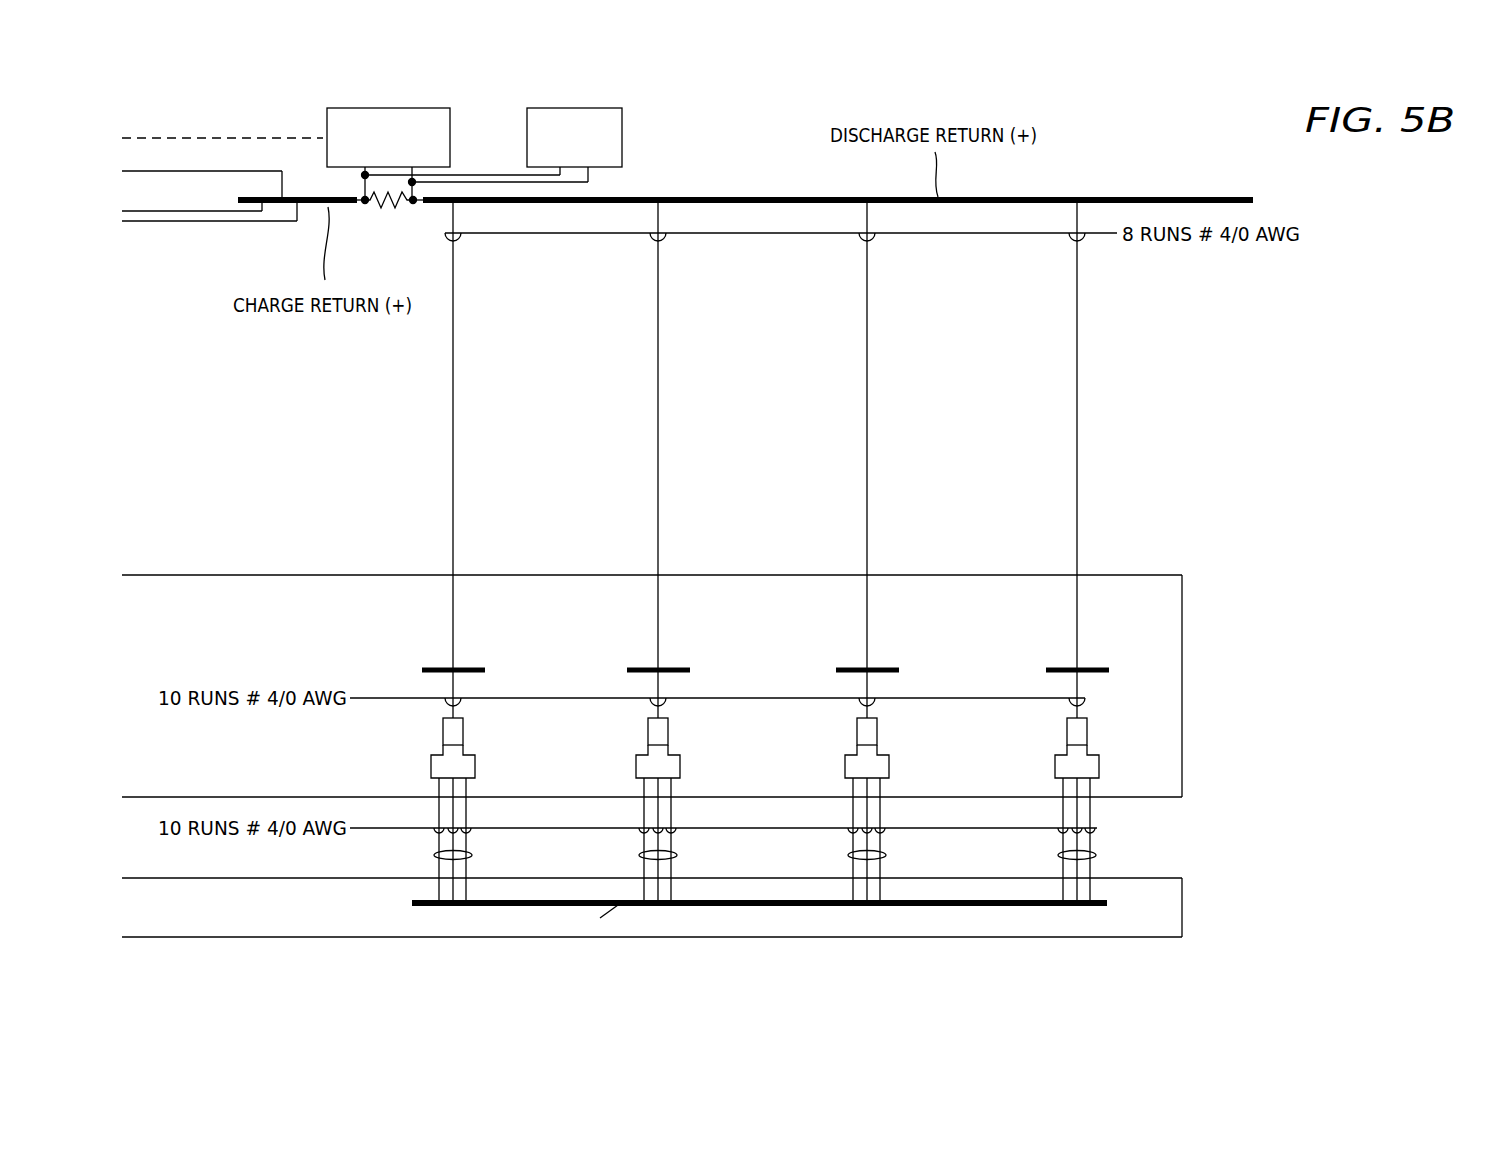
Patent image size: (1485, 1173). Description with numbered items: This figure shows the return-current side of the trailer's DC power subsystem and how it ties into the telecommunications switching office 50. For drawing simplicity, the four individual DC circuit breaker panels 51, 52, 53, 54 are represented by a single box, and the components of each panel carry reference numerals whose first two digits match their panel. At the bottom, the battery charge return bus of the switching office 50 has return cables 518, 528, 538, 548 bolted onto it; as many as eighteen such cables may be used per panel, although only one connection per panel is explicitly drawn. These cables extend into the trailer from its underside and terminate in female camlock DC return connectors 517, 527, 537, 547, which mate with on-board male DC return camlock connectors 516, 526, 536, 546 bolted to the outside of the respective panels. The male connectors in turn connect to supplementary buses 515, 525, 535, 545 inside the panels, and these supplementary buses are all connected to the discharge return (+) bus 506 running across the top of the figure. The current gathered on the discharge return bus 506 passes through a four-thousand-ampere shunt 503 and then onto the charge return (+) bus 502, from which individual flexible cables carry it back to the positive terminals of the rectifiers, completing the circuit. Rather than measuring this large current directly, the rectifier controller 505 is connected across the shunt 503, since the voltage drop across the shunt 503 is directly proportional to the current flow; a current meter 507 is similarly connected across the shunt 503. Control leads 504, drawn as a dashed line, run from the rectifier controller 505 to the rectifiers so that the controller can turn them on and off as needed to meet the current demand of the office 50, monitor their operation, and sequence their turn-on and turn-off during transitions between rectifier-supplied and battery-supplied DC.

The switching office 50 is at (1184, 913).
The DC circuit breaker panel 51 is at (342, 575).
The DC circuit breaker panel 52 is at (483, 460).
The DC circuit breaker panel 53 is at (605, 460).
The DC circuit breaker panel 54 is at (729, 460).
The charge return (+) bus 502 is at (313, 194).
The shunt 503 is at (388, 209).
The control leads 504 is at (207, 139).
The rectifier controller 505 is at (450, 140).
The discharge return (+) bus 506 is at (1243, 198).
The current meter 507 is at (622, 140).
The supplementary bus 515 is at (430, 667).
The male DC return camlock connectors 516 is at (381, 731).
The female 3-FER camlock DC return connectors 517 is at (382, 761).
The return cables 518 is at (433, 855).
The supplementary bus 525 is at (681, 667).
The male DC return camlock connectors 526 is at (587, 731).
The female DC return connectors 527 is at (587, 761).
The return cables 528 is at (638, 855).
The supplementary bus 535 is at (890, 667).
The male DC return camlock connectors 536 is at (796, 731).
The female DC return connectors 537 is at (796, 761).
The return cables 538 is at (847, 855).
The supplementary bus 545 is at (1100, 667).
The male DC return camlock connectors 546 is at (1006, 731).
The female DC return connectors 547 is at (1006, 761).
The return cables 548 is at (1057, 855).